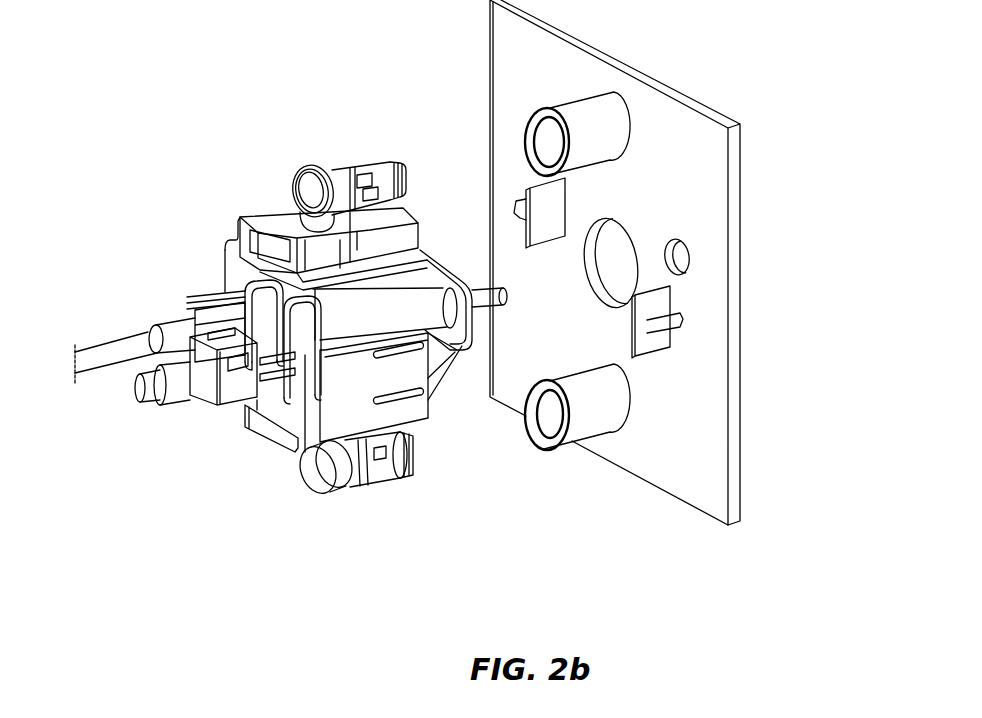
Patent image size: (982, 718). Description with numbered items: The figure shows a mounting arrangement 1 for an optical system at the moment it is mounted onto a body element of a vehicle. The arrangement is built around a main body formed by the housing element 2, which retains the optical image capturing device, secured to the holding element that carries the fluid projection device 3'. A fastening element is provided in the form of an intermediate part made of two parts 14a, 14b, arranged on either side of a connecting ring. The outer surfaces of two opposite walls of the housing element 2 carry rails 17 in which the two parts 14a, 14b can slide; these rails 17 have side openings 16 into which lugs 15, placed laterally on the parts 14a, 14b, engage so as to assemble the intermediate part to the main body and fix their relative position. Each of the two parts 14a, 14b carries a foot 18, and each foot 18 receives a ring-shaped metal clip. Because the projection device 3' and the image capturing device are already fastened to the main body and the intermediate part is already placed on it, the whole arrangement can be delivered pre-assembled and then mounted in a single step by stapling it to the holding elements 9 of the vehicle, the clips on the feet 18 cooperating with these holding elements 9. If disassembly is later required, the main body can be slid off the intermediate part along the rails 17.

The mounting arrangement 1 is at (182, 138).
The housing element 2 is at (233, 263).
The fluid projection device 3' is at (196, 410).
The holding elements 9 is at (575, 437).
The first part of the intermediate part 14a is at (323, 172).
The second part of the intermediate part 14b is at (340, 490).
The lugs 15 is at (358, 163).
The side openings 16 is at (370, 478).
The rails 17 is at (263, 217).
The feet 18 is at (380, 162).